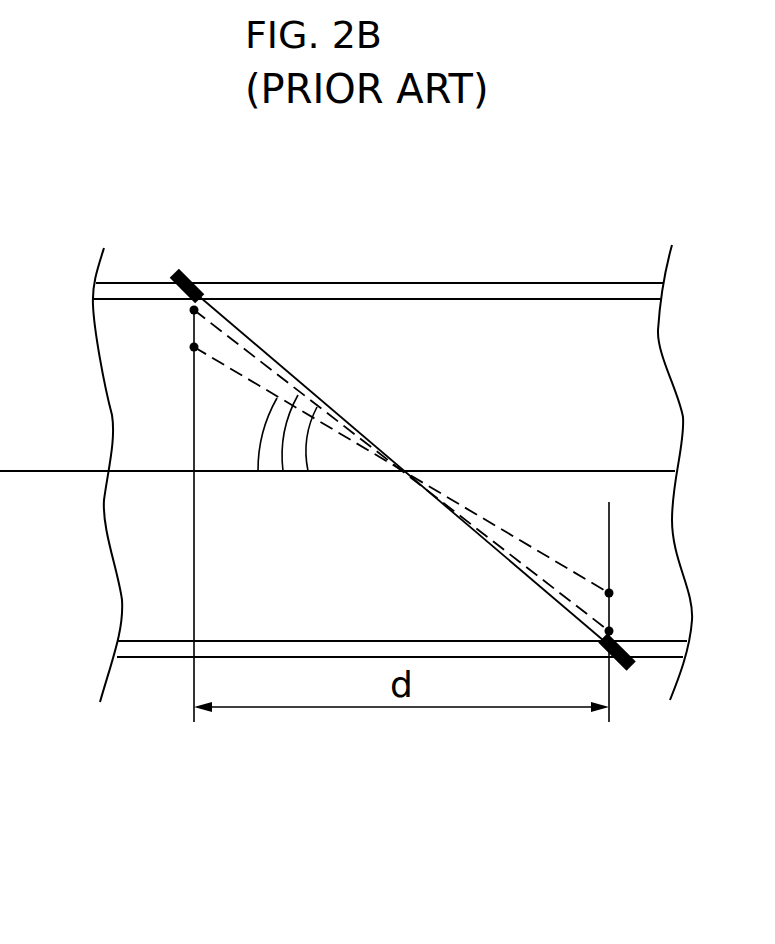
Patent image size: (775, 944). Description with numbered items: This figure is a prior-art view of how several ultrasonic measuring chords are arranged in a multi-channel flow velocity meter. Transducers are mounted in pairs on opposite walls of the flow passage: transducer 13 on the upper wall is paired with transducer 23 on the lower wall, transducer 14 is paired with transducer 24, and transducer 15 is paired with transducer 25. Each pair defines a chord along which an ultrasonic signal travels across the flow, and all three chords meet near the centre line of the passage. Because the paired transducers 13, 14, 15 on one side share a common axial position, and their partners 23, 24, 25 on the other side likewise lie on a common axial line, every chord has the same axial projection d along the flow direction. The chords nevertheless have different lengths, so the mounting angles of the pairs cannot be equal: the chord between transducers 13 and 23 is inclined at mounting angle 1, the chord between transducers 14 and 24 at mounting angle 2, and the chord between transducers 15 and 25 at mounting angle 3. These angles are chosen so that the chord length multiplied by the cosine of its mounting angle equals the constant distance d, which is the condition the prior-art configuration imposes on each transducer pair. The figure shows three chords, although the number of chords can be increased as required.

The transducer 13 is at (186, 272).
The transducer 14 is at (190, 311).
The transducer 15 is at (192, 349).
The transducer 23 is at (628, 663).
The transducer 24 is at (611, 631).
The transducer 25 is at (611, 592).
The mounting angle 1 is at (310, 447).
The mounting angle 2 is at (282, 444).
The mounting angle 3 is at (255, 434).